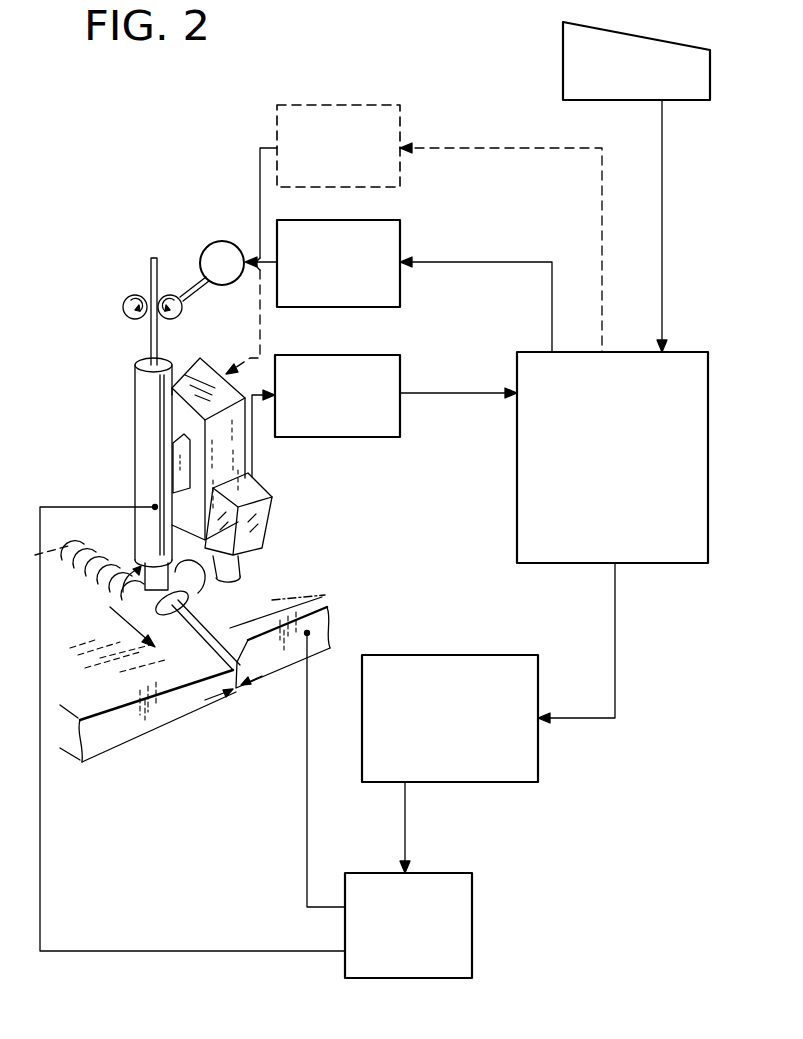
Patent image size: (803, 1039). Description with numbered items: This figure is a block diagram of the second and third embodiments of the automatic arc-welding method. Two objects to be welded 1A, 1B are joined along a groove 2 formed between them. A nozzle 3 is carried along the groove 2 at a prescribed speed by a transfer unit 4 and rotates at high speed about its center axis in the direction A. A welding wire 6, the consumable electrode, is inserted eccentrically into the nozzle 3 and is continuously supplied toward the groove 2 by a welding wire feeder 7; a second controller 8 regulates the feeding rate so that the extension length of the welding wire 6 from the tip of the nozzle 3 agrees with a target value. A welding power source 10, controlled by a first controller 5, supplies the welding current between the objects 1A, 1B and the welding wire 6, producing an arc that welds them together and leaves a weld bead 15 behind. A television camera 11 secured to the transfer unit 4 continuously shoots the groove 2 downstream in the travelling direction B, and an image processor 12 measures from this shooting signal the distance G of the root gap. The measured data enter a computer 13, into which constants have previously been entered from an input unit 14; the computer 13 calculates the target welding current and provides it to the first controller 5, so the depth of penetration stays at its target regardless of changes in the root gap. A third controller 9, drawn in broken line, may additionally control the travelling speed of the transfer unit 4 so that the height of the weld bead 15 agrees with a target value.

The object to be welded 1A is at (173, 707).
The object to be welded 1B is at (270, 680).
The groove 2 is at (265, 608).
The nozzle 3 is at (135, 432).
The transfer unit 4 is at (212, 358).
The first controller 5 is at (443, 655).
The welding wire 6 is at (148, 343).
The welding wire feeder 7 is at (222, 245).
The second controller 8 is at (400, 218).
The third controller 9 is at (333, 105).
The welding power source 10 is at (472, 920).
The television camera 11 is at (267, 516).
The image processor 12 is at (400, 357).
The computer 13 is at (517, 470).
The input unit 14 is at (563, 58).
The weld bead 15 is at (100, 565).
The rotation direction of the nozzle A is at (188, 574).
The travelling direction of the nozzle B is at (123, 628).
The distance of the root gap G is at (240, 692).